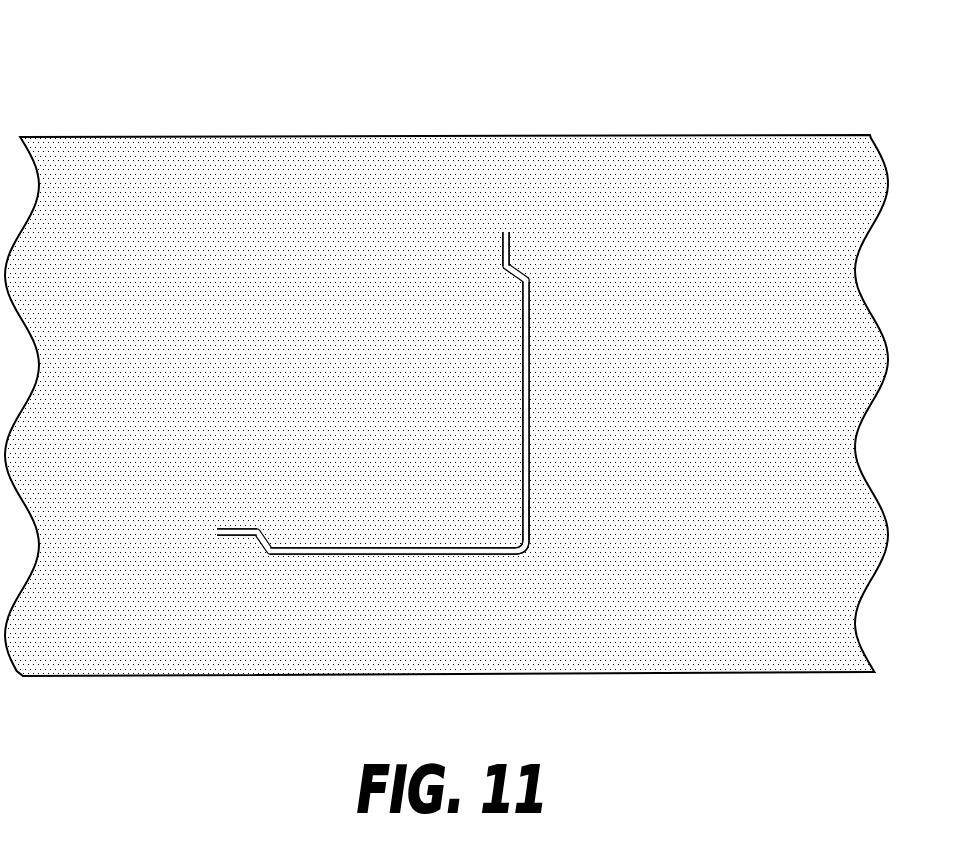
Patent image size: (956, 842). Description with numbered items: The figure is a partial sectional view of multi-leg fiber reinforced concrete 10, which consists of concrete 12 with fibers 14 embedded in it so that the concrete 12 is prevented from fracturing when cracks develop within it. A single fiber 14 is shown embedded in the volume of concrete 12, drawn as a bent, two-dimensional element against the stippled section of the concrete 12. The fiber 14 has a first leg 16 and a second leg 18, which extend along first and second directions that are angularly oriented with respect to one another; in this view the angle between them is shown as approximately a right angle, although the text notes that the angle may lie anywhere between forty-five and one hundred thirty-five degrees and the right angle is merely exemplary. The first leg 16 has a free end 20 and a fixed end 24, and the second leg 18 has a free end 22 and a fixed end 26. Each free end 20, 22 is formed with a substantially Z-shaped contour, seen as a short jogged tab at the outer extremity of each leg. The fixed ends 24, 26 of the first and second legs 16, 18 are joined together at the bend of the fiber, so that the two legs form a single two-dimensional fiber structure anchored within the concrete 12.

The multi-leg fiber reinforced concrete 10 is at (125, 63).
The concrete 12 is at (700, 155).
The fiber 14 is at (408, 423).
The first leg 16 is at (349, 557).
The second leg 18 is at (532, 443).
The free end 20 is at (237, 527).
The free end 22 is at (503, 248).
The fixed end 24 is at (500, 557).
The fixed end 26 is at (532, 535).